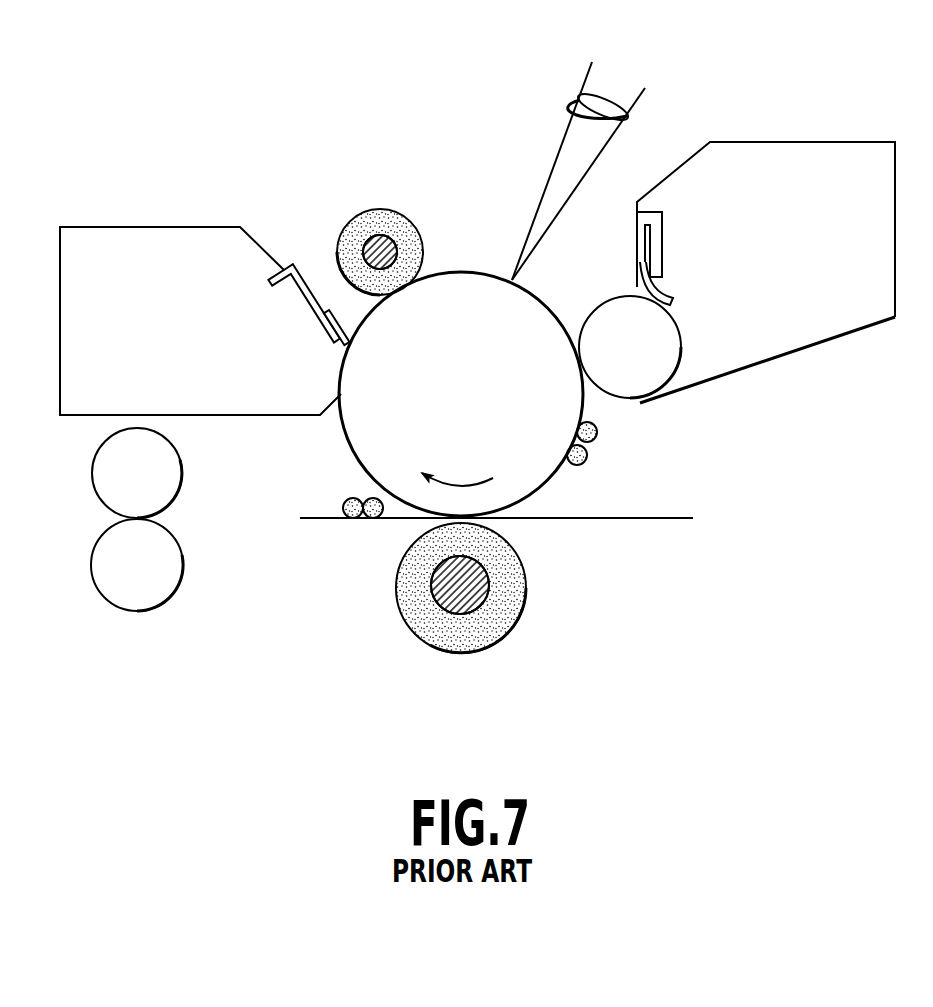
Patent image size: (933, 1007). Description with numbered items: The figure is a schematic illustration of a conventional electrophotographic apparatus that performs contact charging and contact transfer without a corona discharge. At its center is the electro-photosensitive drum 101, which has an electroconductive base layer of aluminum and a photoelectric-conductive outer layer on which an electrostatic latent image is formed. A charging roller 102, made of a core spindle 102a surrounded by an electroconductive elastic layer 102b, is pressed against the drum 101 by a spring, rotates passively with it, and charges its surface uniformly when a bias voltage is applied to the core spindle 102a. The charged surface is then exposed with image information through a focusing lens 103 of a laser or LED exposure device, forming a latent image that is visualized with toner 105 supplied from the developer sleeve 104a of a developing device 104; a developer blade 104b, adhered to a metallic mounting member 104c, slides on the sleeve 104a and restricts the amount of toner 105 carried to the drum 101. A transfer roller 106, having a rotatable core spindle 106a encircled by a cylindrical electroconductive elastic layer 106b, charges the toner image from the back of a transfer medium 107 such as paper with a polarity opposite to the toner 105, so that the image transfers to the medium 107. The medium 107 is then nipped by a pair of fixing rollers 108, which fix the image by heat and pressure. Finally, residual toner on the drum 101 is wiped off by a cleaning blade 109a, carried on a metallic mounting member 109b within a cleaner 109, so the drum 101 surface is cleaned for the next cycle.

The electro-photosensitive drum 101 is at (468, 293).
The charging roller 102 is at (355, 192).
The core spindle 102a is at (378, 250).
The electroconductive elastic layer 102b is at (388, 220).
The focusing lens 103 is at (602, 105).
The developing device 104 is at (731, 213).
The developer sleeve 104a is at (607, 294).
The developer blade 104b is at (667, 293).
The metallic mounting member 104c is at (657, 238).
The toner 105 is at (347, 500).
The transfer roller 106 is at (498, 640).
The core spindle 106a is at (479, 603).
The cylindrical electroconductive elastic layer 106b is at (513, 583).
The transfer medium 107 is at (680, 519).
The fixing rollers 108 is at (105, 477).
The cleaner 109 is at (205, 271).
The cleaning blade 109a is at (340, 340).
The metallic mounting member 109b is at (298, 307).